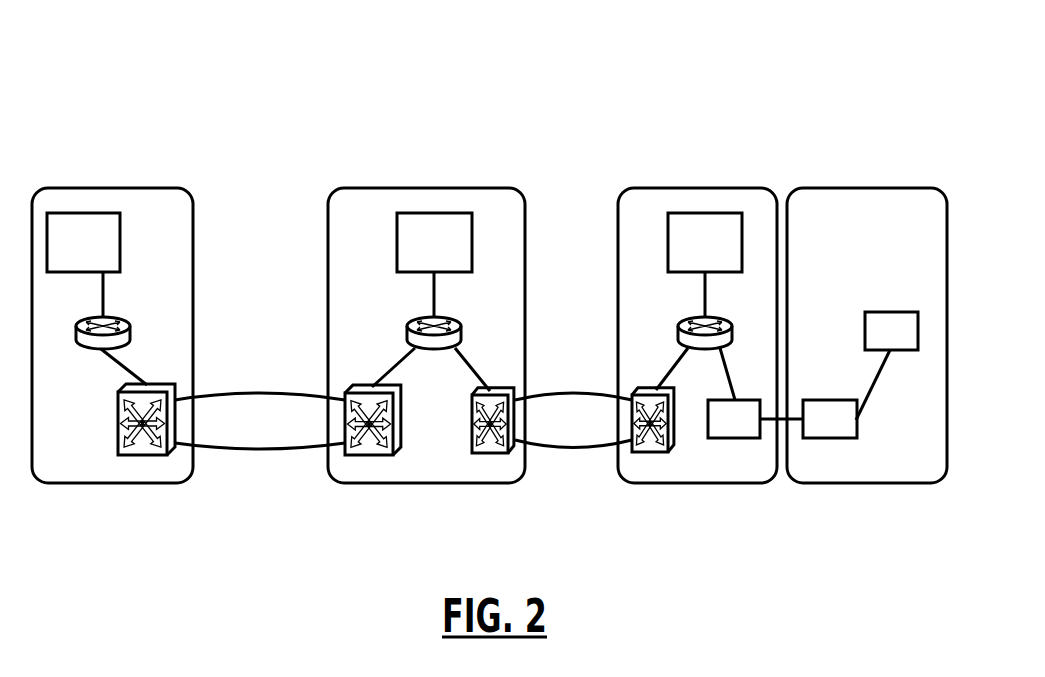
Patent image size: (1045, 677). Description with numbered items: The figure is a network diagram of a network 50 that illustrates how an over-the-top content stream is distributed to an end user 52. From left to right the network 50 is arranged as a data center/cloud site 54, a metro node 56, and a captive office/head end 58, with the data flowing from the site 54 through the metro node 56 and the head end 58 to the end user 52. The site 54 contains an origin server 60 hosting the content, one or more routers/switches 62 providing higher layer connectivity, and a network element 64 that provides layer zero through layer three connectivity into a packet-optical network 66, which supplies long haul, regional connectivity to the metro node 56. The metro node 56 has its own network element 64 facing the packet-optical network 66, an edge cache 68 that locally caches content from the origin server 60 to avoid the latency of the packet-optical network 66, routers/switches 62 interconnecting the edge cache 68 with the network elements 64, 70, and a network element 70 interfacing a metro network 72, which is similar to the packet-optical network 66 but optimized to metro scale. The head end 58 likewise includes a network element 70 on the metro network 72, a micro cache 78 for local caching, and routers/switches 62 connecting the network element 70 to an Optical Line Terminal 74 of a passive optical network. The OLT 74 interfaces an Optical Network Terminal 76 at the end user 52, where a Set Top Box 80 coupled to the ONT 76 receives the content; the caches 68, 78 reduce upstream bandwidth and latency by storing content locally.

The network 50 is at (553, 80).
The end user 52 is at (907, 188).
The data center/cloud site 54 is at (168, 188).
The metro node 56 is at (504, 188).
The captive office/head end 58 is at (757, 188).
The origin server 60 is at (121, 246).
The routers/switches 62 is at (130, 322).
The network element 64 is at (118, 429).
The packet-optical network 66 is at (273, 393).
The edge cache 68 is at (473, 245).
The network element 70 is at (472, 440).
The metro network 72 is at (568, 392).
The Optical Line Terminal (OLT) 74 is at (708, 434).
The Optical Network Terminal (ONT) 76 is at (831, 400).
The micro cache 78 is at (668, 265).
The Set Top Box 80 is at (889, 312).